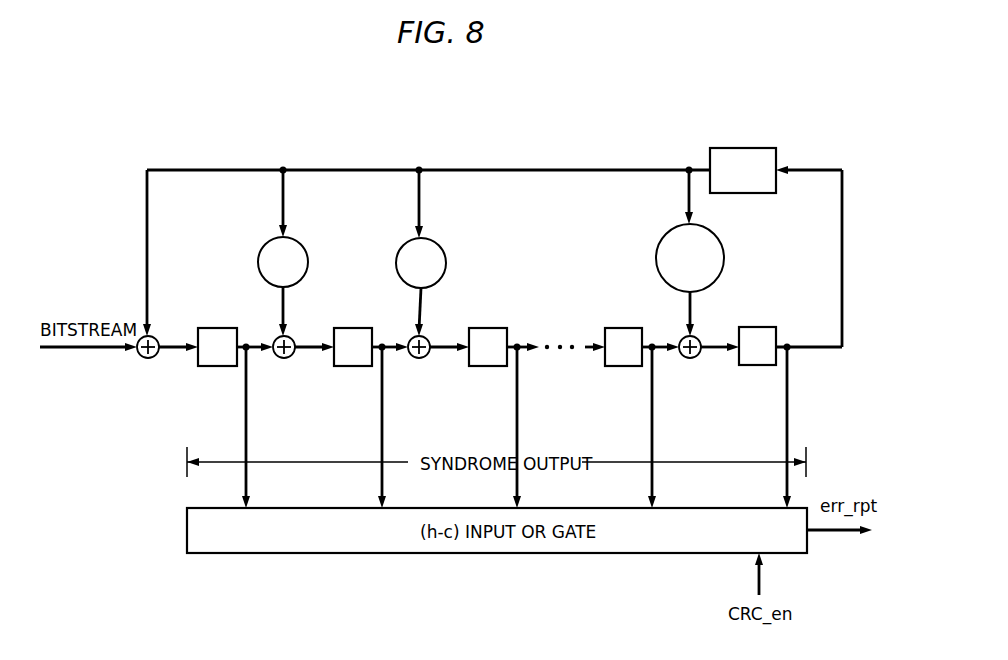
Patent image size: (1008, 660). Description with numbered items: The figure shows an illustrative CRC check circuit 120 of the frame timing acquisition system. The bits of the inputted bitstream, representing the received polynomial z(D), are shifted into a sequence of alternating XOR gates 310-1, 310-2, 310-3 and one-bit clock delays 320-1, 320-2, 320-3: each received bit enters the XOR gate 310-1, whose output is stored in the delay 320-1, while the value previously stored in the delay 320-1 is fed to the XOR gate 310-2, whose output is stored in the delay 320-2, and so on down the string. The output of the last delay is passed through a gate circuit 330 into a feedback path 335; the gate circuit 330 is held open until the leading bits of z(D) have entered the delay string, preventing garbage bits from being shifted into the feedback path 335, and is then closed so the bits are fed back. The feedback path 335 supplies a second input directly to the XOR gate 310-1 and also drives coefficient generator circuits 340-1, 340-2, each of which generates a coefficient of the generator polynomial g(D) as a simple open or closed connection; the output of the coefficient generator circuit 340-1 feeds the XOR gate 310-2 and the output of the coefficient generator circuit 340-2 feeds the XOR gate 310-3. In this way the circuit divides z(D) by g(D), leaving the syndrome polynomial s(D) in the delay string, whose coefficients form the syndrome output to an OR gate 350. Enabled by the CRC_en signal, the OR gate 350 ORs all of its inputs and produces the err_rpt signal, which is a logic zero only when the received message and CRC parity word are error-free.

The feedback path 335 is at (222, 152).
The gate circuit 330 is at (743, 148).
The coefficient generator circuit 340-1 is at (273, 243).
The coefficient generator circuit 340-2 is at (437, 243).
The 1-bit clock delay 320-1 is at (217, 328).
The 1-bit clock delay 320-2 is at (352, 328).
The 1-bit clock delay 320-3 is at (487, 328).
The XOR gate 310-1 is at (145, 358).
The XOR gate 310-2 is at (284, 358).
The XOR gate 310-3 is at (421, 358).
The h-c input OR gate 350 is at (187, 528).
The CRC checker 120 is at (820, 404).